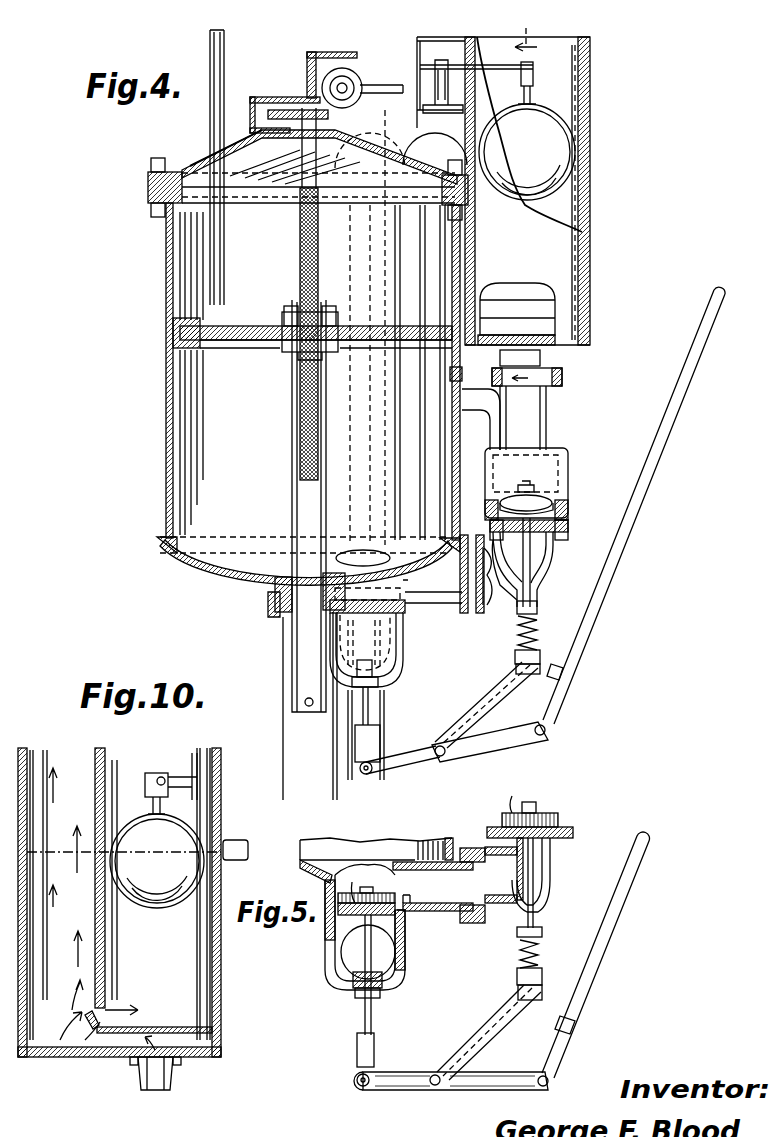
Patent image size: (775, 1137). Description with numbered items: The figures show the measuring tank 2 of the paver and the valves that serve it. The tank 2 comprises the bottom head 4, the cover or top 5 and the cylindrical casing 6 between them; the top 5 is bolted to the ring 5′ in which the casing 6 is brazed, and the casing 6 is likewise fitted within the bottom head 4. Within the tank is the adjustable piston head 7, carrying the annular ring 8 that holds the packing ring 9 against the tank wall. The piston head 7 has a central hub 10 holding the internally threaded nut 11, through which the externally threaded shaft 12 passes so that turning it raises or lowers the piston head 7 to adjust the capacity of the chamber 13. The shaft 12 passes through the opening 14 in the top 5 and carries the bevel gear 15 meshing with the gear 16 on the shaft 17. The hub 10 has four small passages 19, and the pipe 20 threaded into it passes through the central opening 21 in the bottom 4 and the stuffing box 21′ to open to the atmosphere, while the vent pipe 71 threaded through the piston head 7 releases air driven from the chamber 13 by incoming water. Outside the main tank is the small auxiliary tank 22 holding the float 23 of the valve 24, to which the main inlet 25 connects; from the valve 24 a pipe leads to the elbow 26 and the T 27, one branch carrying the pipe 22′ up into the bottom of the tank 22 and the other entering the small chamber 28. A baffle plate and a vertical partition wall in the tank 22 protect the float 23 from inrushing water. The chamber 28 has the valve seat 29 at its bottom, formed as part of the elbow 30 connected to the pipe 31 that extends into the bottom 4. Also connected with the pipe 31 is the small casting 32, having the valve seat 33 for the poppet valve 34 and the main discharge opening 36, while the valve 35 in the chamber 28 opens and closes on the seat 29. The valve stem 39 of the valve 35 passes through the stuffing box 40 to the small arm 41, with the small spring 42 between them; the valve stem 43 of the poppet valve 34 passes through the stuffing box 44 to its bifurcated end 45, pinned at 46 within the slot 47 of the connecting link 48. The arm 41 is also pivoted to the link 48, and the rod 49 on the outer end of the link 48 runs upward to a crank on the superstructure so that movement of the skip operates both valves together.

In FIG. 4, the measuring tank 2 is at (168, 277).
In FIG. 5, the measuring tank 2 is at (300, 848).
In FIG. 4, the bottom head 4 is at (232, 572).
In FIG. 5, the bottom head 4 is at (300, 866).
In FIG. 4, the cover or top 5 is at (200, 162).
In FIG. 4, the ring 5′ is at (150, 194).
In FIG. 4, the cylindrical casing 6 is at (166, 448).
In FIG. 5, the cylindrical casing 6 is at (449, 840).
In FIG. 4, the adjustable piston head 7 is at (174, 346).
In FIG. 4, the annular ring 8 is at (174, 327).
In FIG. 4, the packing ring 9 is at (174, 338).
In FIG. 4, the central hub 10 is at (287, 310).
In FIG. 4, the internally threaded nut 11 is at (327, 300).
In FIG. 4, the externally threaded shaft 12 is at (303, 220).
In FIG. 4, the chamber 13 is at (245, 439).
In FIG. 4, the opening 14 is at (340, 134).
In FIG. 4, the bevel gear 15 is at (297, 110).
In FIG. 4, the gear 16 is at (350, 72).
In FIG. 4, the shaft 17 is at (378, 85).
In FIG. 4, the small passages 19 is at (290, 305).
In FIG. 4, the pipe 20 is at (298, 489).
In FIG. 4, the central opening 21 is at (290, 570).
In FIG. 4, the stuffing box 21′ is at (280, 614).
In FIG. 4, the auxiliary tank 22 is at (588, 270).
In FIG. 10, the auxiliary tank 22 is at (218, 1010).
In FIG. 4, the pipe 22′ is at (548, 352).
In FIG. 10, the pipe 22′ is at (172, 1078).
In FIG. 4, the float 23 is at (570, 148).
In FIG. 10, the float 23 is at (177, 837).
In FIG. 4, the valve 24 is at (436, 130).
In FIG. 4, the main inlet 25 is at (381, 284).
In FIG. 4, the elbow 26 is at (480, 415).
In FIG. 4, the T 27 is at (548, 410).
In FIG. 4, the small chamber 28 is at (569, 480).
In FIG. 4, the valve seat 29 is at (572, 533).
In FIG. 5, the valve seat 29 is at (574, 834).
In FIG. 4, the elbow 30 is at (552, 560).
In FIG. 5, the elbow 30 is at (550, 870).
In FIG. 4, the pipe 31 is at (446, 596).
In FIG. 5, the pipe 31 is at (441, 912).
In FIG. 4, the small casting 32 is at (403, 652).
In FIG. 5, the small casting 32 is at (395, 958).
In FIG. 5, the valve seat 33 is at (328, 938).
In FIG. 4, the poppet valve 34 is at (405, 625).
In FIG. 5, the poppet valve 34 is at (372, 905).
In FIG. 4, the valve 35 is at (570, 516).
In FIG. 5, the valve 35 is at (551, 816).
In FIG. 5, the main discharge opening 36 is at (352, 992).
In FIG. 4, the valve stem 39 is at (531, 567).
In FIG. 5, the valve stem 39 is at (534, 885).
In FIG. 4, the stuffing box 40 is at (538, 610).
In FIG. 5, the stuffing box 40 is at (542, 934).
In FIG. 4, the small arm 41 is at (486, 690).
In FIG. 5, the small arm 41 is at (481, 1010).
In FIG. 4, the small spring 42 is at (518, 632).
In FIG. 5, the small spring 42 is at (548, 954).
In FIG. 4, the valve stem 43 is at (370, 710).
In FIG. 5, the valve stem 43 is at (353, 958).
In FIG. 4, the stuffing box 44 is at (380, 683).
In FIG. 5, the stuffing box 44 is at (376, 998).
In FIG. 4, the bifurcated end 45 is at (357, 743).
In FIG. 5, the bifurcated end 45 is at (373, 1052).
In FIG. 4, the pin 46 is at (360, 768).
In FIG. 5, the pin 46 is at (363, 1086).
In FIG. 4, the slot 47 is at (388, 780).
In FIG. 5, the slot 47 is at (355, 1080).
In FIG. 4, the connecting link 48 is at (490, 755).
In FIG. 5, the connecting link 48 is at (479, 1078).
In FIG. 4, the rod 49 is at (588, 617).
In FIG. 5, the rod 49 is at (599, 946).
In FIG. 4, the vent pipe 71 is at (224, 264).